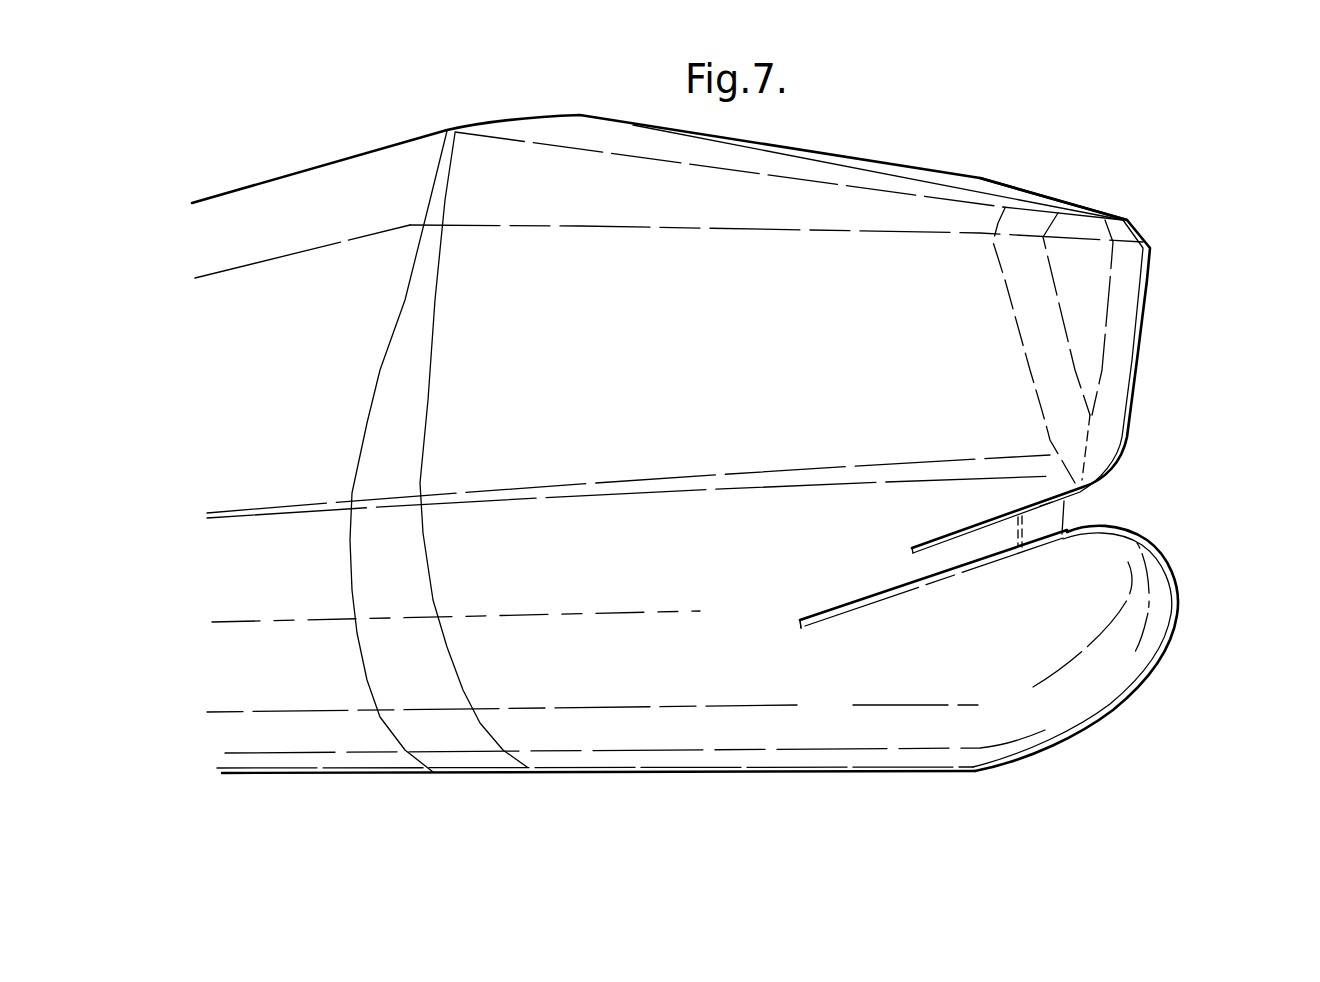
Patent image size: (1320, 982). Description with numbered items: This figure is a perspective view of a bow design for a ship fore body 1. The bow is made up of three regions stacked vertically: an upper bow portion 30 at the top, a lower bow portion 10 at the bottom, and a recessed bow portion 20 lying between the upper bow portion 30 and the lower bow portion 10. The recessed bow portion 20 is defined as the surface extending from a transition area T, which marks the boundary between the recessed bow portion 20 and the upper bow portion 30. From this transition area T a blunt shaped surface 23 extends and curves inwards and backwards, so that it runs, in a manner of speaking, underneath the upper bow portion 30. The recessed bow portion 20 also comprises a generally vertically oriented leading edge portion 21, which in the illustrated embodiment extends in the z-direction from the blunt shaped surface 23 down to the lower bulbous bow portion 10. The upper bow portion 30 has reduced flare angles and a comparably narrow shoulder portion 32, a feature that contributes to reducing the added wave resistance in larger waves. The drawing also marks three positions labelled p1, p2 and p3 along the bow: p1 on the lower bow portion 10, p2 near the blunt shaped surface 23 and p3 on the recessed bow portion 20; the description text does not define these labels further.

The ship fore body 1 is at (692, 359).
The lower bow portion 10 is at (1135, 703).
The recessed bow portion 20 is at (1137, 515).
The leading edge portion 21 is at (1050, 530).
The blunt shaped surface 23 is at (1097, 492).
The upper bow portion 30 is at (1083, 292).
The shoulder portion 32 is at (957, 287).
The transition area T is at (1123, 470).
The measurement point p1 is at (802, 628).
The measurement point p2 is at (1047, 504).
The measurement point p3 is at (912, 562).